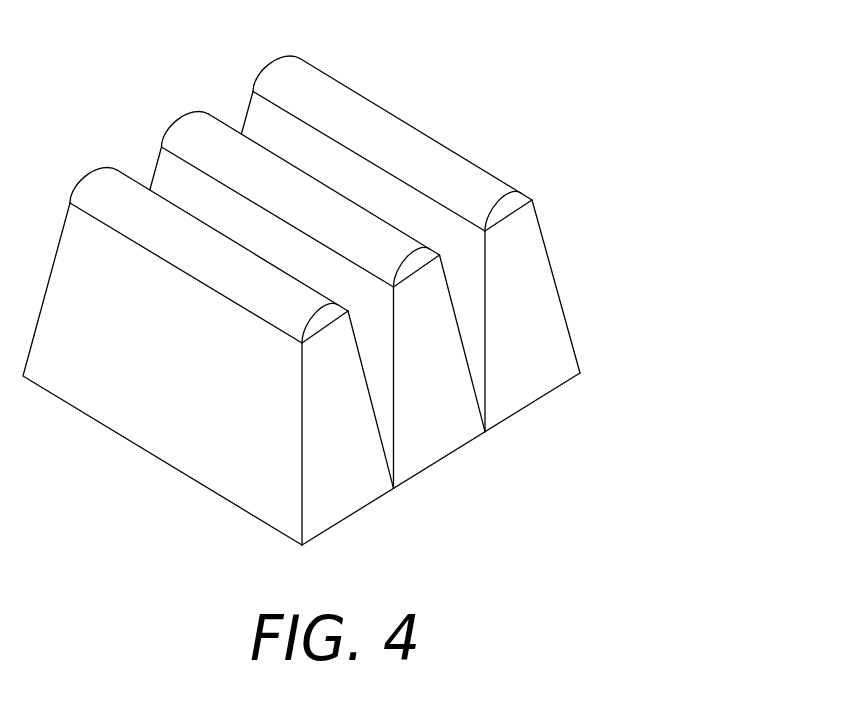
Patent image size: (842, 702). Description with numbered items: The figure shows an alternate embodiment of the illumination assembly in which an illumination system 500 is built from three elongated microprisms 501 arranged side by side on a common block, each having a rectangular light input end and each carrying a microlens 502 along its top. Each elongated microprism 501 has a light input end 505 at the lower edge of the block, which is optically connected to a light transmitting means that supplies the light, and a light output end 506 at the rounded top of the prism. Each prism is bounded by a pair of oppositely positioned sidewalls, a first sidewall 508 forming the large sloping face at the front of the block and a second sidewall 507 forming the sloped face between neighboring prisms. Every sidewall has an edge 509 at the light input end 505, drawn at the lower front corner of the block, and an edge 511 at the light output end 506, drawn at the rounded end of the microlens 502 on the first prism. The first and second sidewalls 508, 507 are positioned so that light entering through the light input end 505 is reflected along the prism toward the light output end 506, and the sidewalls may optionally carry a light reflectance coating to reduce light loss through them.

The illumination system 500 is at (373, 306).
The elongated microprism 501 is at (547, 350).
The microlens 502 is at (394, 283).
The light input end 505 is at (530, 407).
The light output end 506 is at (510, 213).
The second sidewall 507 is at (345, 482).
The first sidewall 508 is at (187, 443).
The edge at the light input end 509 is at (267, 528).
The edge at the light output end 511 is at (320, 340).